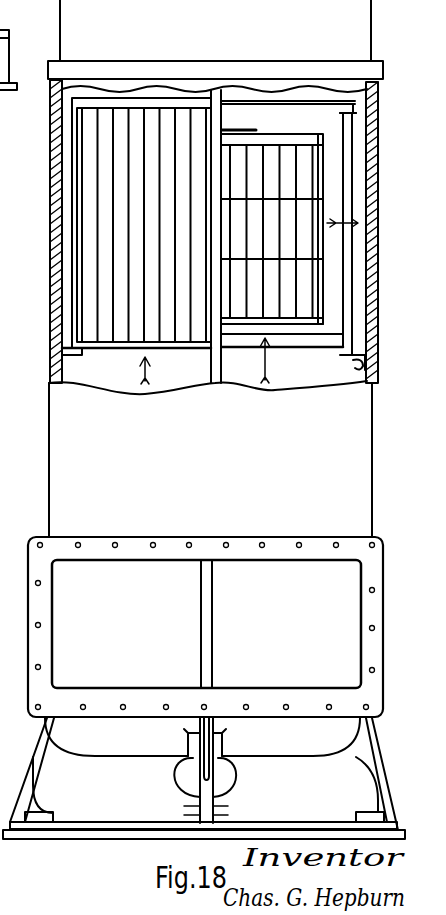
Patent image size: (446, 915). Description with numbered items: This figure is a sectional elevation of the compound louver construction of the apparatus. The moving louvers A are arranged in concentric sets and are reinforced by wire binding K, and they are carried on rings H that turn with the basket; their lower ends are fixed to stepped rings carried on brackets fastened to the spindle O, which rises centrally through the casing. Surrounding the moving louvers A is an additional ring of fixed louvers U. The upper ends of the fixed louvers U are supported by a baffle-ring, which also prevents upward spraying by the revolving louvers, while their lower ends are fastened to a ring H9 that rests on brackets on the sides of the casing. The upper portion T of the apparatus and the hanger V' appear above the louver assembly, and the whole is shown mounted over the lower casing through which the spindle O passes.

The tower T is at (215, 30).
The fixed louvers U is at (384, 192).
The moving louvers A is at (272, 227).
The hanger bar V' is at (340, 152).
The wire binding K is at (323, 260).
The rings H is at (318, 324).
The ring H9 is at (291, 343).
The spindle O is at (213, 647).